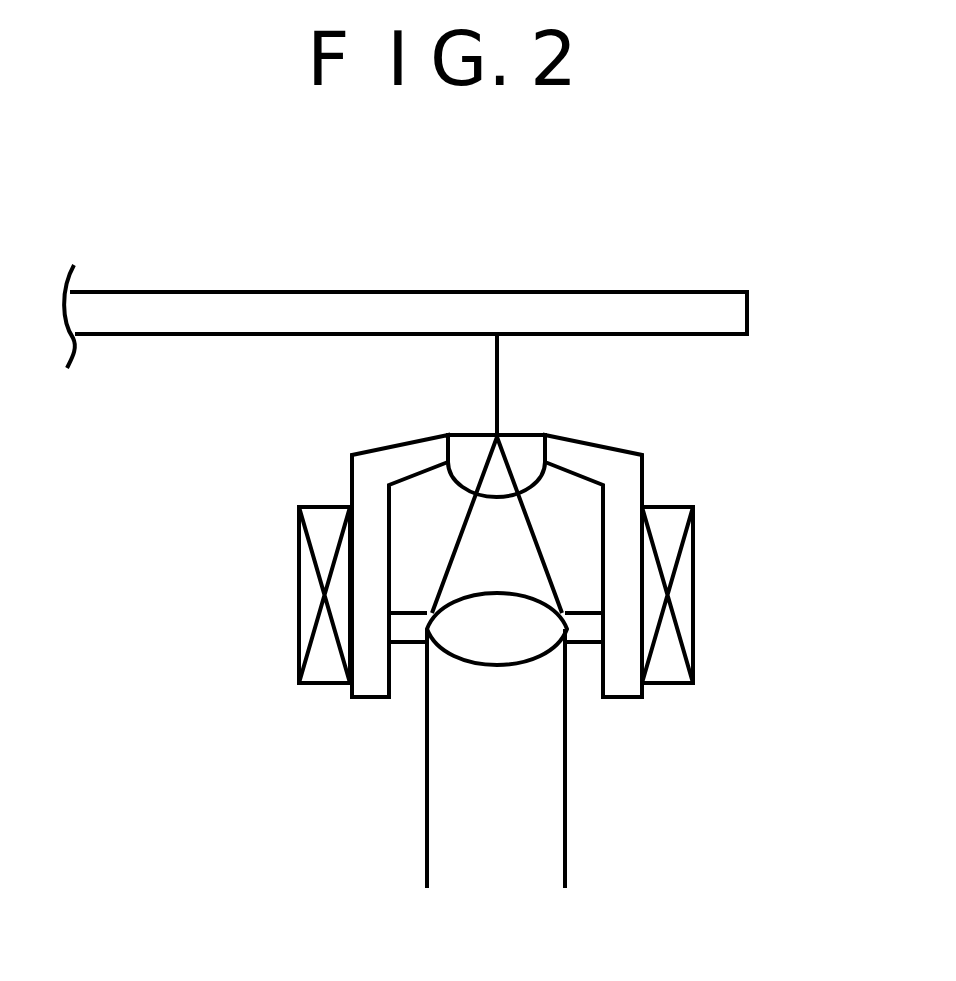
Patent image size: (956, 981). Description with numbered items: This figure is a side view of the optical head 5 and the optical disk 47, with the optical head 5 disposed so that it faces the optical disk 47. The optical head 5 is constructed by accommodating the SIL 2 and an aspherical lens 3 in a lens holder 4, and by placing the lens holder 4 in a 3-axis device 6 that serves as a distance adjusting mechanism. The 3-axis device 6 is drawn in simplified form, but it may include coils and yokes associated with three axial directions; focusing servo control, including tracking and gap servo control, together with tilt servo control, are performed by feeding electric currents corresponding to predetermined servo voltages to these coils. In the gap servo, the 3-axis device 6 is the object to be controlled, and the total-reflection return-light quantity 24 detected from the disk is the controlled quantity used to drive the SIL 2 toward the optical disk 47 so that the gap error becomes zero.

The optical disk 47 is at (552, 303).
The optical head 5 is at (393, 440).
The lens holder 4 is at (362, 493).
The SIL 2 is at (523, 442).
The aspherical lens 3 is at (528, 640).
The 3-axis device 6 is at (673, 667).
The total-reflection return-light quantity 24 is at (565, 843).